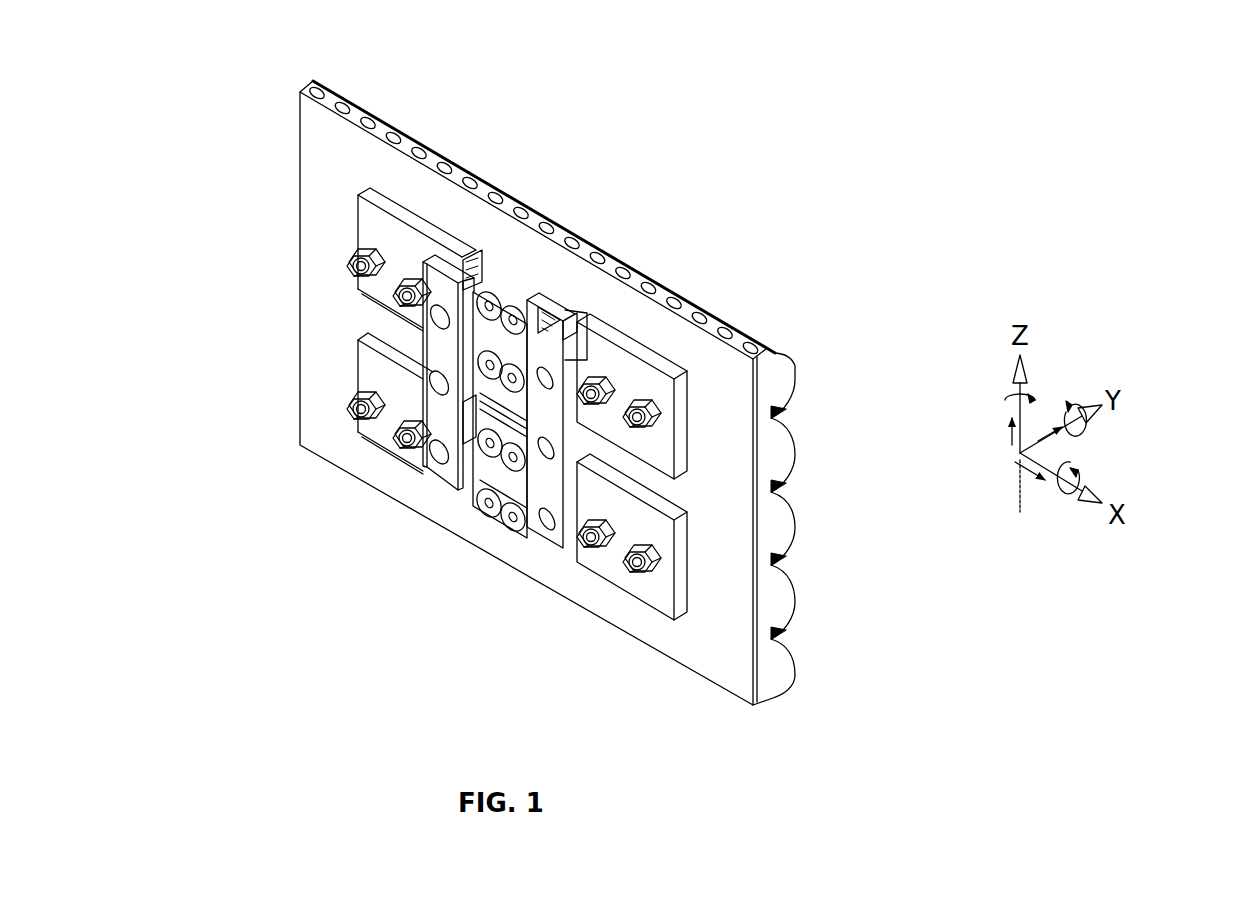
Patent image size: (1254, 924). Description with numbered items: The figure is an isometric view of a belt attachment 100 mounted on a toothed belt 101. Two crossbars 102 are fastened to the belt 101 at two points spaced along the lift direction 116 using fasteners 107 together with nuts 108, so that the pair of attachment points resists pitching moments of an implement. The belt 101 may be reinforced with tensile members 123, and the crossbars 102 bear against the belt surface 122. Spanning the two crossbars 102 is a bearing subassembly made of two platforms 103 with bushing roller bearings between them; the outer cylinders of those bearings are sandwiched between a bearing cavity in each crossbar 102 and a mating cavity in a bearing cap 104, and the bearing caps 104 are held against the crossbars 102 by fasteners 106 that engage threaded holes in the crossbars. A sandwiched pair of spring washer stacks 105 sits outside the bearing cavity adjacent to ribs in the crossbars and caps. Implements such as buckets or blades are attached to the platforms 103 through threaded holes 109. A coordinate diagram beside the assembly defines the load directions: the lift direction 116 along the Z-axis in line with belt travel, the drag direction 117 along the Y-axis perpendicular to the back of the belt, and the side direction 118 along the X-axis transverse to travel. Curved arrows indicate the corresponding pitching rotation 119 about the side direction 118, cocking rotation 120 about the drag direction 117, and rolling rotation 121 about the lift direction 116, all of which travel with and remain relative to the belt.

The belt attachment 100 is at (430, 213).
The belt 101 is at (310, 84).
The crossbars 102 is at (357, 340).
The platforms 103 is at (427, 290).
The bearing caps 104 is at (483, 337).
The spring washer stacks 105 is at (553, 330).
The fasteners 106 is at (500, 458).
The fasteners 107 is at (374, 284).
The nuts 108 is at (643, 405).
The threaded holes 109 is at (540, 383).
The lift direction 116 is at (1005, 437).
The drag direction 117 is at (1040, 458).
The side direction 118 is at (1022, 509).
The pitching rotation 119 is at (1075, 470).
The cocking rotation 120 is at (1060, 415).
The rolling rotation 121 is at (1000, 402).
The belt surface 122 is at (697, 650).
The tensile members 123 is at (587, 340).